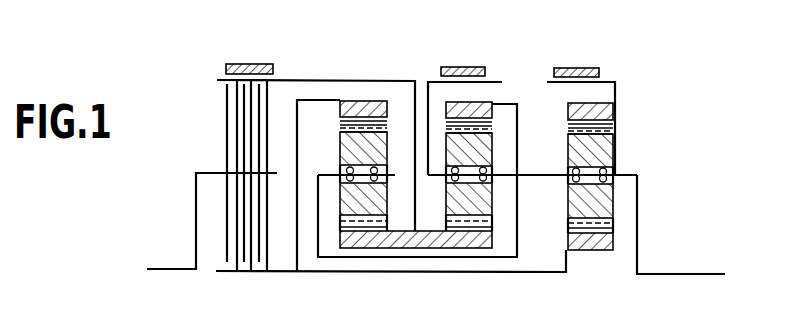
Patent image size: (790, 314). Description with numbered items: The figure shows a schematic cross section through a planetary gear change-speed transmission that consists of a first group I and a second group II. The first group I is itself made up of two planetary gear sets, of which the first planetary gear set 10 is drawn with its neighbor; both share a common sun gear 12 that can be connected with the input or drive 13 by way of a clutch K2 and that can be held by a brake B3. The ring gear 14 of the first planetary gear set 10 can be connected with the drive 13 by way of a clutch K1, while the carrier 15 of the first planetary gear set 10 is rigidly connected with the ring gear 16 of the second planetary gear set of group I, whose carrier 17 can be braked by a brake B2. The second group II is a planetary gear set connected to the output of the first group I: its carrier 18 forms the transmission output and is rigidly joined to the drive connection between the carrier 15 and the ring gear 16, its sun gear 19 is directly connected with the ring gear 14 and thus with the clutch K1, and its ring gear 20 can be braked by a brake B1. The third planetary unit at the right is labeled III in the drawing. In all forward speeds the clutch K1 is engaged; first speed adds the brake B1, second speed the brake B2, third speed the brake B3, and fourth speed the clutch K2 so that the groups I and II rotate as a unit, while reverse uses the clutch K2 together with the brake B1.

The first planetary gear set 10 is at (335, 165).
The common sun gear 12 is at (423, 249).
The input or drive 13 is at (177, 266).
The ring gear of the first planetary gear set 14 is at (352, 108).
The carrier of the first planetary gear set 15 is at (320, 180).
The ring gear of the second planetary gear set 16 is at (480, 108).
The carrier of the second planetary gear set 17 is at (427, 143).
The carrier of the second group 18 is at (638, 222).
The sun gear of the second group 19 is at (586, 240).
The ring gear of the second group 20 is at (603, 118).
The brake B1 is at (576, 66).
The brake B2 is at (472, 66).
The brake B3 is at (258, 63).
The clutch K1 is at (249, 218).
The clutch K2 is at (242, 142).
The first group I is at (395, 160).
The second group II is at (515, 127).
The third planetary gear set III is at (636, 155).